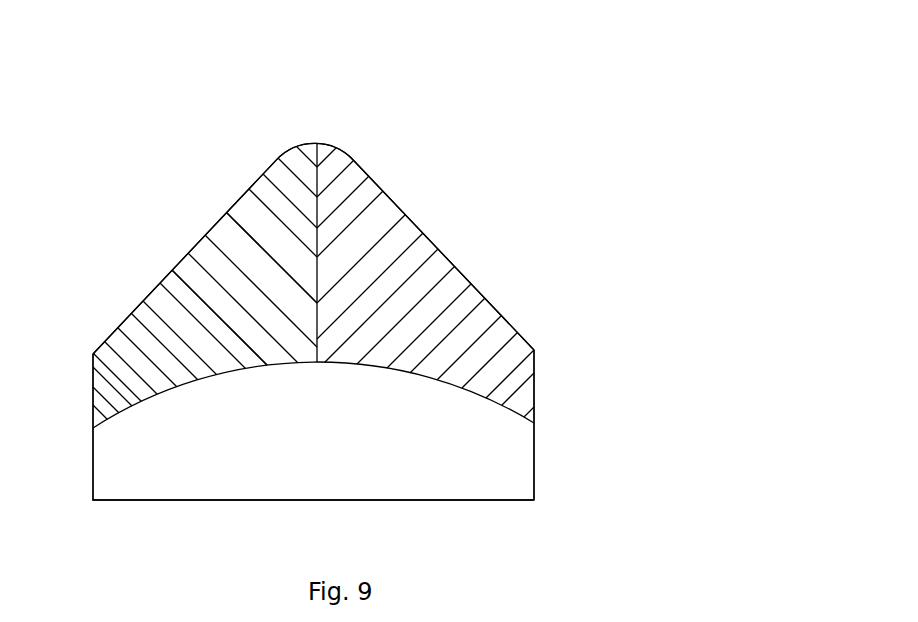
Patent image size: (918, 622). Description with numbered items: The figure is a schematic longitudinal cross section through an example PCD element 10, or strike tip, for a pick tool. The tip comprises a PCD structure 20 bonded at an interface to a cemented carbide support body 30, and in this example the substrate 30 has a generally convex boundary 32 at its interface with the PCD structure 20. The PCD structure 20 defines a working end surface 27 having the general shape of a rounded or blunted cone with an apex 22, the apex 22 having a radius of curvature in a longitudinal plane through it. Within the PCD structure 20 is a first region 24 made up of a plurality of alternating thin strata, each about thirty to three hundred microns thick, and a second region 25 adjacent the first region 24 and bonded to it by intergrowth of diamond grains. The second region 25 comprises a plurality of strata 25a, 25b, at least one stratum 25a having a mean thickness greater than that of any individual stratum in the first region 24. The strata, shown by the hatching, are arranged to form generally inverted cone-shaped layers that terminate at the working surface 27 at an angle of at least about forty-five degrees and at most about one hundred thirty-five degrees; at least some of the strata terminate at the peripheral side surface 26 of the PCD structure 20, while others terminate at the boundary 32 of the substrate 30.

The PCD element 10 is at (127, 131).
The PCD structure 20 is at (366, 181).
The apex 22 is at (313, 143).
The first region 24 is at (285, 178).
The second region 25 is at (386, 243).
The stratum 25a is at (252, 251).
The stratum 25b is at (208, 262).
The peripheral side surface 26 is at (534, 382).
The working end surface 27 is at (462, 272).
The cemented carbide support body 30 is at (534, 445).
The convex boundary 32 is at (425, 378).